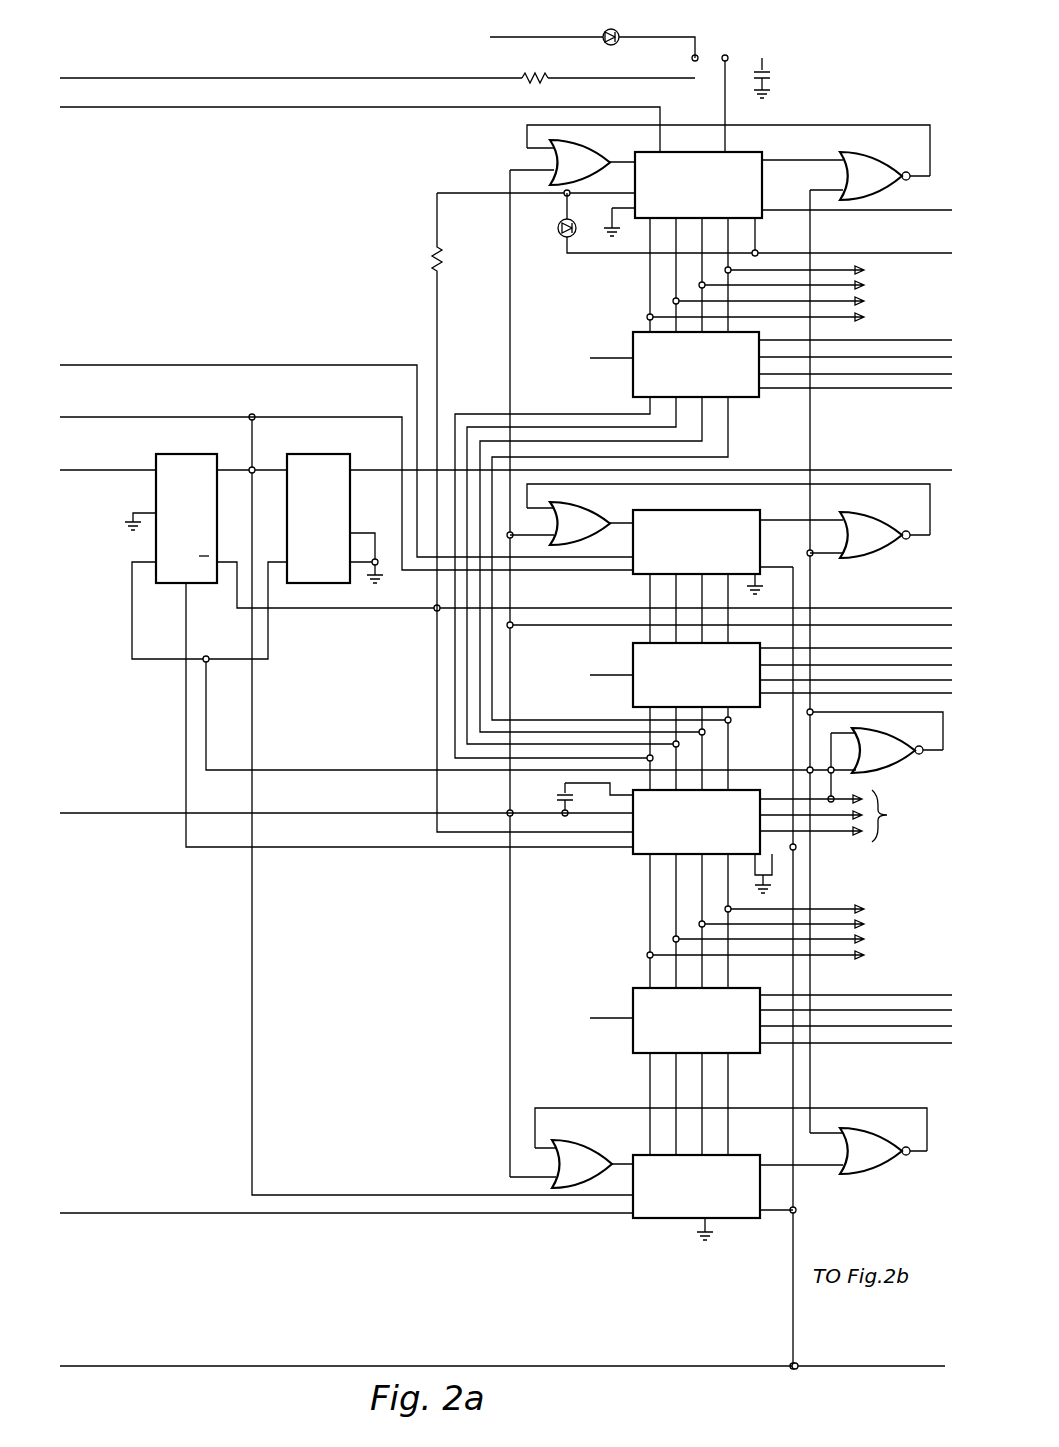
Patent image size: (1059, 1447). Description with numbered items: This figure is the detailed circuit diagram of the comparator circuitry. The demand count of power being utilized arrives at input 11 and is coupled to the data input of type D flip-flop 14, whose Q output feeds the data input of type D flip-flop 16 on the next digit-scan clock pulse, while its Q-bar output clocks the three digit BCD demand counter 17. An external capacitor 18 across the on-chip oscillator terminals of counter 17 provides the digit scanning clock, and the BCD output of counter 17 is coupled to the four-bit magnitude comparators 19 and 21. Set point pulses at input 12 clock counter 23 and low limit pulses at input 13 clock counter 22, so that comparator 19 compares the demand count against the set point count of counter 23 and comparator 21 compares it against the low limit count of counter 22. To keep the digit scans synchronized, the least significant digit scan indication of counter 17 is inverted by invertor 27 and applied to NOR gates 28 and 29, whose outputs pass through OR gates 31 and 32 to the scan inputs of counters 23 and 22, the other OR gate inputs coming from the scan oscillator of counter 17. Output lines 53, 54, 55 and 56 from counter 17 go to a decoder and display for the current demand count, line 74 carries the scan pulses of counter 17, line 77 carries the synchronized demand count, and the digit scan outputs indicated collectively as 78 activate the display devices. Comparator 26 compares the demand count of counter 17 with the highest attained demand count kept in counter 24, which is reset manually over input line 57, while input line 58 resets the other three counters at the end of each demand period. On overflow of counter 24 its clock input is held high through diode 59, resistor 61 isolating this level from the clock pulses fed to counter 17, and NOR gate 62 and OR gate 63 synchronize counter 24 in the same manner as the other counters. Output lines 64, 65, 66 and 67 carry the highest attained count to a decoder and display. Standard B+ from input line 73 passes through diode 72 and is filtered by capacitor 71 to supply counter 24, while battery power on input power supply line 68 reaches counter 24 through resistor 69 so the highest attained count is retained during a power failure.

The input 11 is at (67, 480).
The input 12 is at (69, 360).
The input 13 is at (69, 1208).
The type D flip-flop 14 is at (188, 454).
The type D flip-flop 16 is at (337, 454).
The three digit BCD counter 17 is at (635, 856).
The external capacitor 18 is at (558, 797).
The 4-bit magnitude comparator 19 is at (633, 648).
The 4-bit magnitude comparator 21 is at (633, 988).
The counter 22 is at (655, 1220).
The counter 23 is at (635, 576).
The counter 24 is at (764, 187).
The comparator 26 is at (633, 334).
The invertor 27 is at (893, 770).
The NOR gate 28 is at (885, 556).
The NOR gate 29 is at (862, 1177).
The OR gate 31 is at (582, 503).
The OR gate 32 is at (575, 1141).
The output line 53 is at (880, 907).
The output line 54 is at (885, 925).
The output line 55 is at (883, 941).
The output line 56 is at (876, 960).
The input line 57 is at (68, 113).
The input line 58 is at (71, 1360).
The diode 59 is at (737, 233).
The resistor 61 is at (432, 258).
The NOR gate 62 is at (875, 197).
The OR gate 63 is at (548, 160).
The output line 64 is at (878, 270).
The output line 65 is at (880, 286).
The output line 66 is at (880, 302).
The output line 67 is at (873, 318).
The input power supply line 68 is at (69, 74).
The resistor 69 is at (524, 78).
The capacitor 71 is at (775, 78).
The diode 72 is at (619, 30).
The input line 73 is at (497, 31).
The line 74 is at (102, 806).
The line 77 is at (121, 409).
The digit scan outputs 78 is at (887, 815).